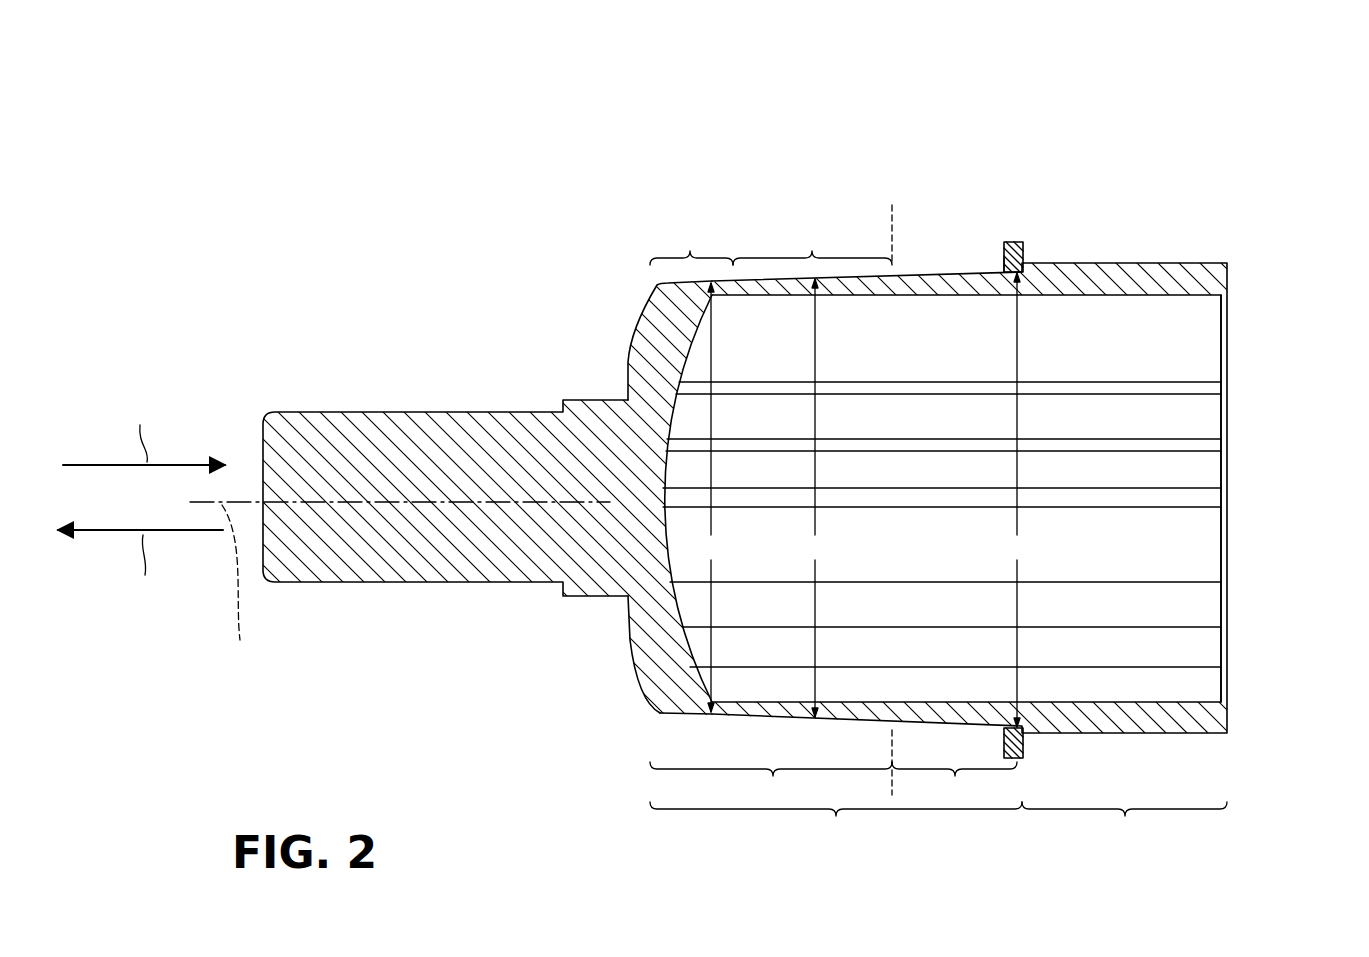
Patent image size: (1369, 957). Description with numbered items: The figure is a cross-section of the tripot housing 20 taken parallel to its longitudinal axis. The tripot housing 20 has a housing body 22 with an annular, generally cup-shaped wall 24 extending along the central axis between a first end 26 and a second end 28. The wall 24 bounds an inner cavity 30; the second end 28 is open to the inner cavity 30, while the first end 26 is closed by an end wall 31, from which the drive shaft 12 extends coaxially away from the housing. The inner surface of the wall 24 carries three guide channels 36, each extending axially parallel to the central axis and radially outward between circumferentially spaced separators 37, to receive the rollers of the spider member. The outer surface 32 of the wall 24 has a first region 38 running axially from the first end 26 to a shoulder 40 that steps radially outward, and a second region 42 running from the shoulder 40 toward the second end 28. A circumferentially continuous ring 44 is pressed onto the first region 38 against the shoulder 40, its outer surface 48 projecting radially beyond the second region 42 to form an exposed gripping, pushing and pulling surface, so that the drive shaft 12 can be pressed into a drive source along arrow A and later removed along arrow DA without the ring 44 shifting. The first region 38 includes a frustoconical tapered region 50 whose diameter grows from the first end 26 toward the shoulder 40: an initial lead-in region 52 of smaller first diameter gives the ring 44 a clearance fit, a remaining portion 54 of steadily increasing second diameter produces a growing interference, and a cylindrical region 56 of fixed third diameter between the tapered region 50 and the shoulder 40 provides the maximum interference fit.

The drive shaft 12 is at (380, 412).
The tripot housing 20 is at (1113, 178).
The housing body 22 is at (677, 685).
The wall 24 is at (1165, 278).
The first end 26 is at (637, 660).
The second end 28 is at (1227, 718).
The inner cavity 30 is at (1008, 456).
The end wall 31 is at (645, 623).
The outer surface 32 is at (1047, 258).
The guide channels 36 is at (1183, 500).
The separators 37 is at (1197, 420).
The first region 38 is at (836, 823).
The shoulder 40 is at (1004, 745).
The second region 42 is at (1124, 823).
The ring 44 is at (1004, 258).
The outer surface of ring 48 is at (1015, 240).
The tapered region 50 is at (771, 783).
The initial lead-in region 52 is at (691, 245).
The remaining portion of tapered region 54 is at (812, 245).
The cylindrical region 56 is at (954, 783).